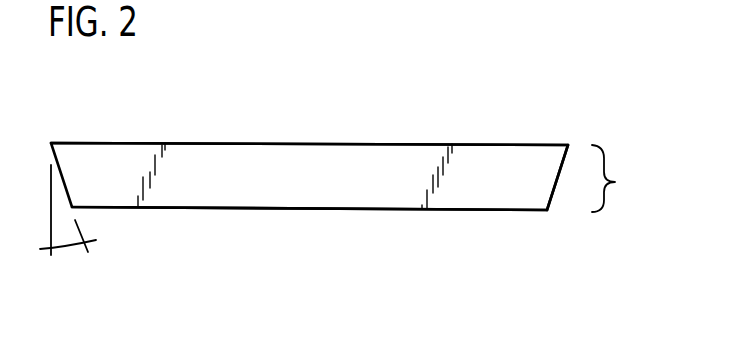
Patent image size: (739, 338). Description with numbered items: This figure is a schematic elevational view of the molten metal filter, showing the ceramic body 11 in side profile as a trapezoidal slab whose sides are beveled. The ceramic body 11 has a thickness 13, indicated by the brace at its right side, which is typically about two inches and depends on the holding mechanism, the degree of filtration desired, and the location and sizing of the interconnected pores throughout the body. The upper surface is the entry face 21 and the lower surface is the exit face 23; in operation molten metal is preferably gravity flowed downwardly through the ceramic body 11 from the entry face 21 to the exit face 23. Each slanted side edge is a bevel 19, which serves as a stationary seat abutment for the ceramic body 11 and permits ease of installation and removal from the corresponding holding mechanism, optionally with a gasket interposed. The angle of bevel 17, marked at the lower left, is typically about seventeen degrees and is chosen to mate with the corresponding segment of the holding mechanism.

The ceramic body 11 is at (150, 116).
The thickness 13 is at (615, 182).
The angle of bevel 17 is at (70, 250).
The bevel 19 is at (560, 180).
The entry face 21 is at (348, 144).
The exit face 23 is at (312, 209).